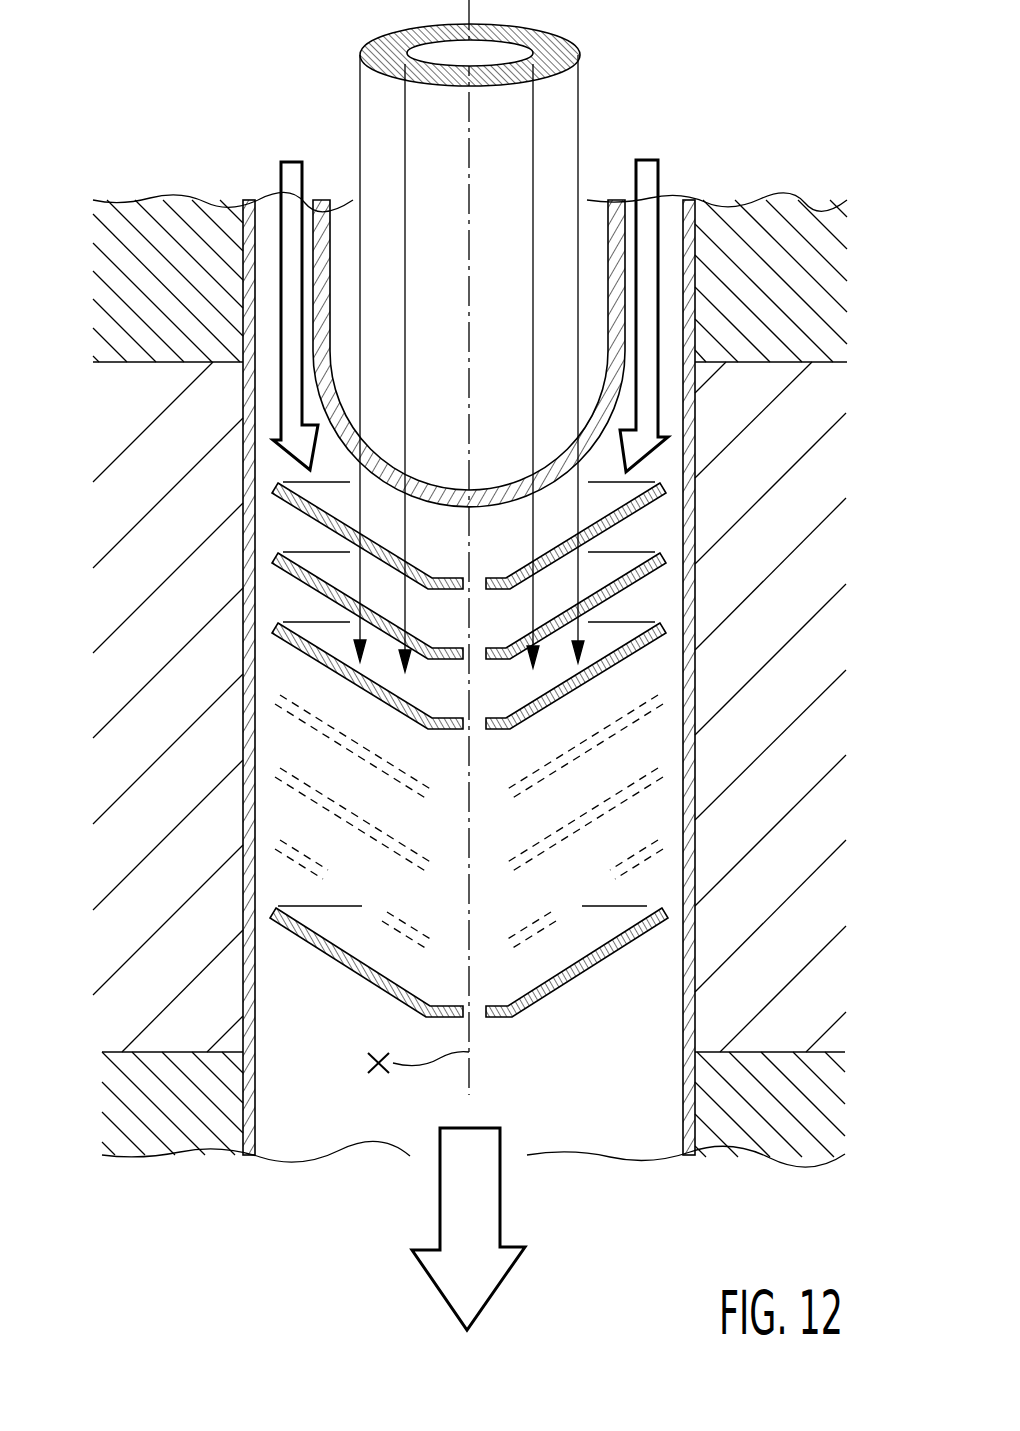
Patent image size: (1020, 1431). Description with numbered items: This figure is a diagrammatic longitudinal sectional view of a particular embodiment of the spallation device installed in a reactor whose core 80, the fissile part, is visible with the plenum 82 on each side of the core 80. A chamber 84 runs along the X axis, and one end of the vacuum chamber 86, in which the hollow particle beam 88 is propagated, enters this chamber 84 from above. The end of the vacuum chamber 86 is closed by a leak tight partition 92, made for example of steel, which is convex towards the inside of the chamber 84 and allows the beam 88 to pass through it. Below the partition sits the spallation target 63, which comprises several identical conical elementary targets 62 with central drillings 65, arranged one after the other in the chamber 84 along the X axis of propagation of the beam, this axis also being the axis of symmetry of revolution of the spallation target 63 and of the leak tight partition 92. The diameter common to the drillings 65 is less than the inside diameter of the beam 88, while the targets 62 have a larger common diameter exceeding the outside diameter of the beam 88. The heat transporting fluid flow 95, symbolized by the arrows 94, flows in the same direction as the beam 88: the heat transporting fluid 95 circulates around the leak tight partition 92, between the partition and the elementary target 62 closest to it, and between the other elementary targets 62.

The conical elementary target 62 is at (320, 516).
The spallation target 63 is at (290, 658).
The central drilling 65 is at (484, 1015).
The core 80 is at (136, 809).
The plenum 82 is at (123, 232).
The chamber 84 is at (693, 684).
The vacuum chamber 86 is at (637, 377).
The hollow particle beam 88 is at (587, 47).
The leak tight partition 92 is at (513, 500).
The arrows 94 is at (292, 163).
The heat transporting fluid flow 95 is at (650, 810).